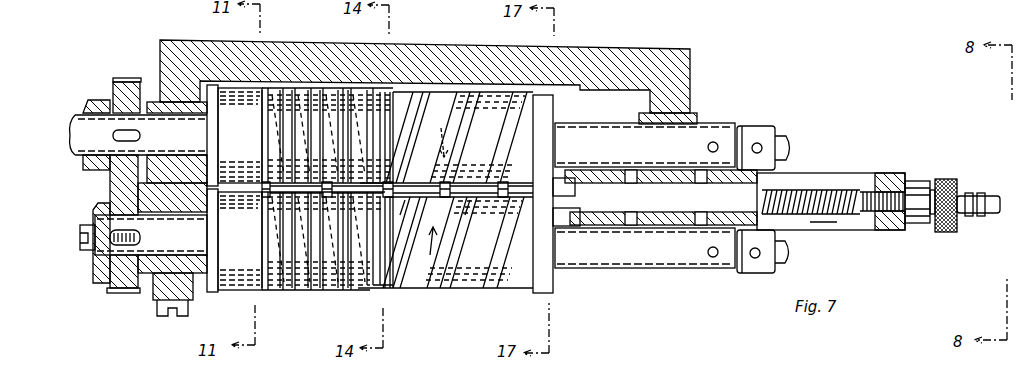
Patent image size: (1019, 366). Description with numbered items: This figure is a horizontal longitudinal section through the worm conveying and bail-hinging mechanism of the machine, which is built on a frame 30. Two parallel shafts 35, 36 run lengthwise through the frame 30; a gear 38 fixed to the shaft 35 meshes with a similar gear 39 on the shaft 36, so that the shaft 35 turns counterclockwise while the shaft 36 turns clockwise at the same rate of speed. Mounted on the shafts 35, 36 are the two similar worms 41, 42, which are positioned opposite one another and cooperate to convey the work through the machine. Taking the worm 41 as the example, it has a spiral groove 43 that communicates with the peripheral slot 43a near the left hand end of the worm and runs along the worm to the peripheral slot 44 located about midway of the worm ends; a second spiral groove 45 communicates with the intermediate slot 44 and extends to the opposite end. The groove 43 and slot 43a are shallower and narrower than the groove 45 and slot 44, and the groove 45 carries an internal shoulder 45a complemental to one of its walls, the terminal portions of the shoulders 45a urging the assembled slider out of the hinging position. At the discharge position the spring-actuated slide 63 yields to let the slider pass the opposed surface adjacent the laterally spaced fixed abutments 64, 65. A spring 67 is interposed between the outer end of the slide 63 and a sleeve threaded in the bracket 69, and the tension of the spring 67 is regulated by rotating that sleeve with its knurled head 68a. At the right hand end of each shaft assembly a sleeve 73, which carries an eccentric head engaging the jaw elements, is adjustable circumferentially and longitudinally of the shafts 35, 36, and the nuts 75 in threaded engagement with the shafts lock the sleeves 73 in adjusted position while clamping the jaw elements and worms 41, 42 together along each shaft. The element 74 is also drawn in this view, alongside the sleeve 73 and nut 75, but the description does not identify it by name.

The frame 30 is at (196, 46).
The shaft 35 is at (78, 123).
The shaft 36 is at (95, 265).
The gear 38 is at (125, 85).
The gear 39 is at (117, 297).
The worm 41 is at (259, 116).
The worm 42 is at (242, 270).
The spiral groove 43 is at (289, 131).
The peripheral slot 43a is at (257, 133).
The peripheral slot 44 is at (377, 289).
The spiral groove 45 is at (422, 286).
The internal shoulder 45a is at (400, 290).
The slide 63 is at (728, 206).
The fixed abutment 64 is at (570, 185).
The fixed abutment 65 is at (566, 222).
The spring 67 is at (840, 216).
The knurled head 68a is at (947, 182).
The bracket 69 is at (833, 180).
The sleeve 73 is at (703, 137).
The block 74 is at (730, 135).
The nut 75 is at (762, 134).